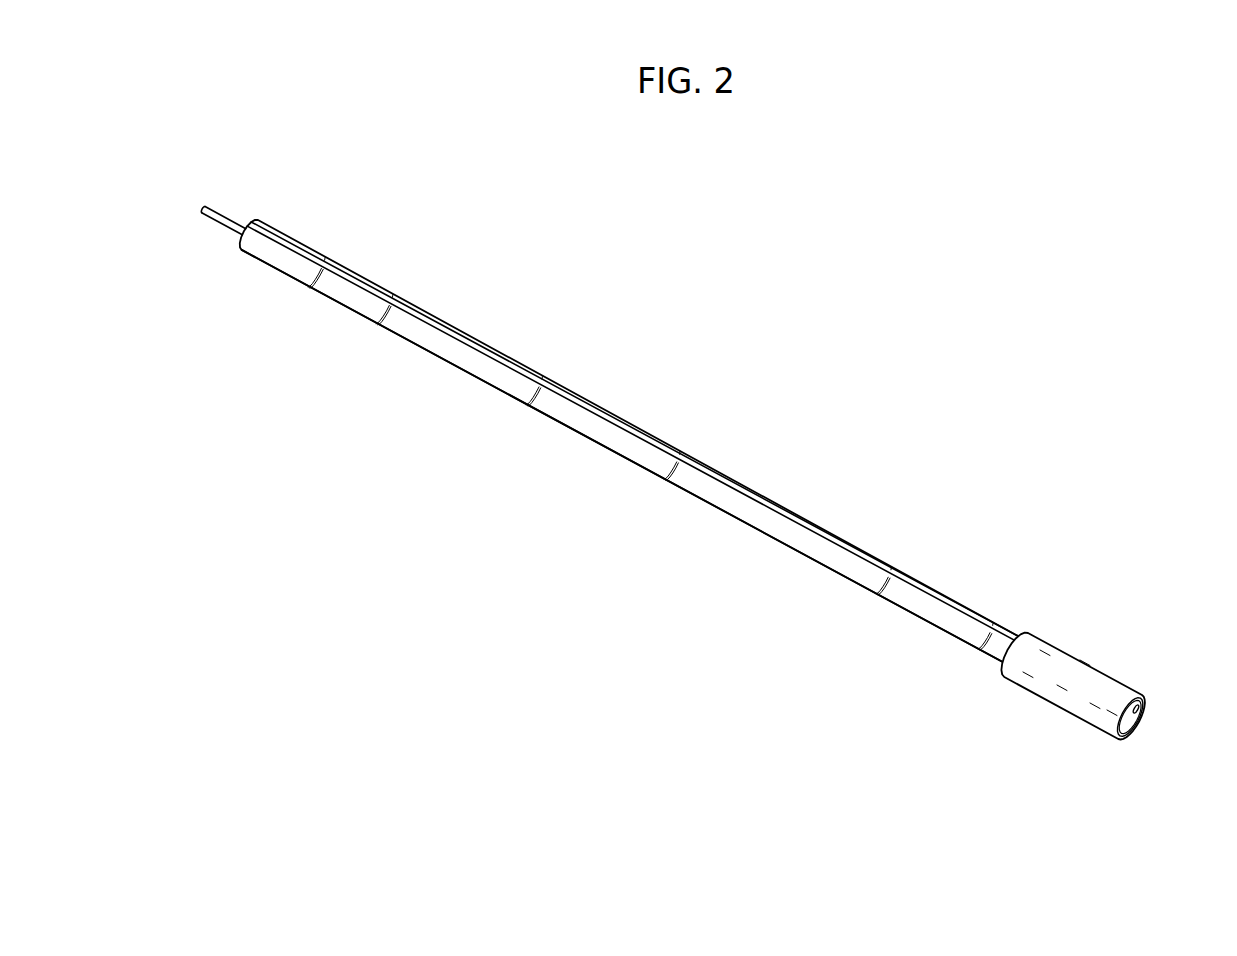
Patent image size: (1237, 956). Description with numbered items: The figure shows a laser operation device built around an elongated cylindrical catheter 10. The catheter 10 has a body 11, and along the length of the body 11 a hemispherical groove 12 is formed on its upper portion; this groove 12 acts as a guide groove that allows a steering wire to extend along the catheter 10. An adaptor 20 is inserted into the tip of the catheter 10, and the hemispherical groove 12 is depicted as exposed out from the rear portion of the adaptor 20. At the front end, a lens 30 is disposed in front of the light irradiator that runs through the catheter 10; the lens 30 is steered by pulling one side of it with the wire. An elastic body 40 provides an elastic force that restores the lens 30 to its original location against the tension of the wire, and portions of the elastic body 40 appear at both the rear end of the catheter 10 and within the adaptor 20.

The catheter 10 is at (635, 448).
The body 11 is at (797, 539).
The hemispherical groove 12 is at (702, 464).
The adaptor 20 is at (1081, 659).
The lens 30 is at (1141, 728).
The elastic body 40 is at (224, 214).